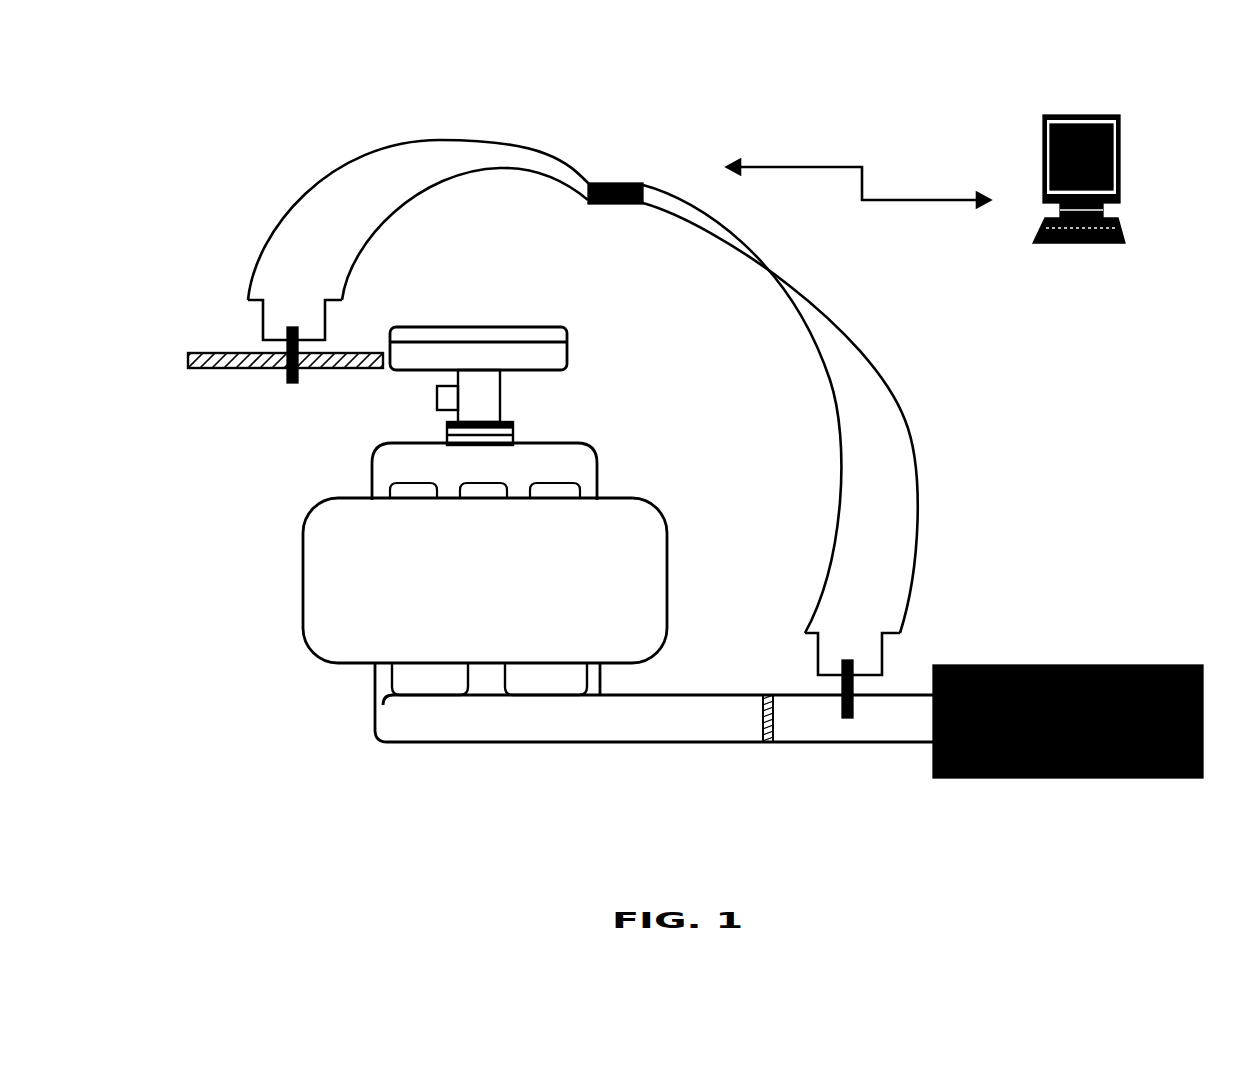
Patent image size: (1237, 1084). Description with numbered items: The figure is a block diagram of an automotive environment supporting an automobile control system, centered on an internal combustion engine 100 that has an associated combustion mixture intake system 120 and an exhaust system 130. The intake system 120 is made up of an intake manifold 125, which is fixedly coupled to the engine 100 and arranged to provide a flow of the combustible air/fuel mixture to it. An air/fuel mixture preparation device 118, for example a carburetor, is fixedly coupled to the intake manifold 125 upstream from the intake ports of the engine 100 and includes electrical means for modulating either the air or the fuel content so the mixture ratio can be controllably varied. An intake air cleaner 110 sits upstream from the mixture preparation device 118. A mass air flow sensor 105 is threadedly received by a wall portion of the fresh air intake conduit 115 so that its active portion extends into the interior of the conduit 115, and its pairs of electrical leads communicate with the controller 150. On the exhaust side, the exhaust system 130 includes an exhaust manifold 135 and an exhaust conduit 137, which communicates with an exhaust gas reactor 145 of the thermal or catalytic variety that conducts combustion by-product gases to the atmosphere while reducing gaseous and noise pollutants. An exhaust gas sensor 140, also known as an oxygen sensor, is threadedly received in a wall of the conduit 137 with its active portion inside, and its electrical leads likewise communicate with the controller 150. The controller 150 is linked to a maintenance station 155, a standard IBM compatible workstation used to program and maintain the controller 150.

The internal combustion engine 100 is at (506, 594).
The mass air flow sensor 105 is at (282, 356).
The intake air cleaner 110 is at (567, 360).
The fresh air intake conduit 115 is at (220, 370).
The air/fuel mixture preparation device 118 is at (437, 405).
The combustion mixture intake system 120 is at (555, 429).
The intake manifold 125 is at (593, 466).
The exhaust system 130 is at (346, 727).
The exhaust manifold 135 is at (568, 743).
The exhaust conduit 137 is at (887, 743).
The exhaust gas sensor 140 is at (845, 718).
The exhaust gas reactor 145 is at (1153, 665).
The controller 150 is at (602, 205).
The maintenance station 155 is at (1077, 243).